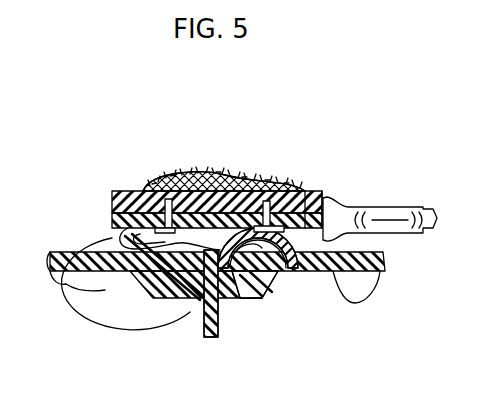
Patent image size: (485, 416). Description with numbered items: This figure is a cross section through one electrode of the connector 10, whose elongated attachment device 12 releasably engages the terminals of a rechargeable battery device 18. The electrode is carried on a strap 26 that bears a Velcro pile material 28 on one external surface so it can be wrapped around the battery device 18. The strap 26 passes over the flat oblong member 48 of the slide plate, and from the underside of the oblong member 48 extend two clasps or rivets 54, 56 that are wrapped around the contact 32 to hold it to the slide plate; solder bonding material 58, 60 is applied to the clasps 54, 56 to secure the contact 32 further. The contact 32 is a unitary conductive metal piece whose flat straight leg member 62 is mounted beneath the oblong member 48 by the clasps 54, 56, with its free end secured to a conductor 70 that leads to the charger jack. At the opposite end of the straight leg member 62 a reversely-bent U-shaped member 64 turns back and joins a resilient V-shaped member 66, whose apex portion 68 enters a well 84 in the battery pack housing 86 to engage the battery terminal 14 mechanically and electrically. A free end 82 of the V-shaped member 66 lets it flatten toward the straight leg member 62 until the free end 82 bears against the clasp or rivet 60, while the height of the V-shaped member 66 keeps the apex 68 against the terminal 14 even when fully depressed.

The connector 10 is at (182, 126).
The attachment device 12 is at (158, 163).
The terminal 14 is at (203, 325).
The rechargeable battery device 18 is at (378, 254).
The strap 26 is at (233, 175).
The Velcro pile material 28 is at (187, 172).
The contact 32 is at (118, 230).
The oblong member 48 is at (112, 205).
The clasp 54 is at (133, 190).
The clasp 56 is at (308, 200).
The solder bonding material 58 is at (168, 298).
The solder bonding material 60 is at (205, 323).
The straight leg member 62 is at (263, 200).
The reversely-bent U-shaped member 64 is at (62, 297).
The V-shaped member 66 is at (253, 255).
The apex portion 68 is at (241, 298).
The conductor 70 is at (437, 200).
The free end 82 is at (315, 253).
The well 84 is at (85, 328).
The battery pack housing 86 is at (46, 262).